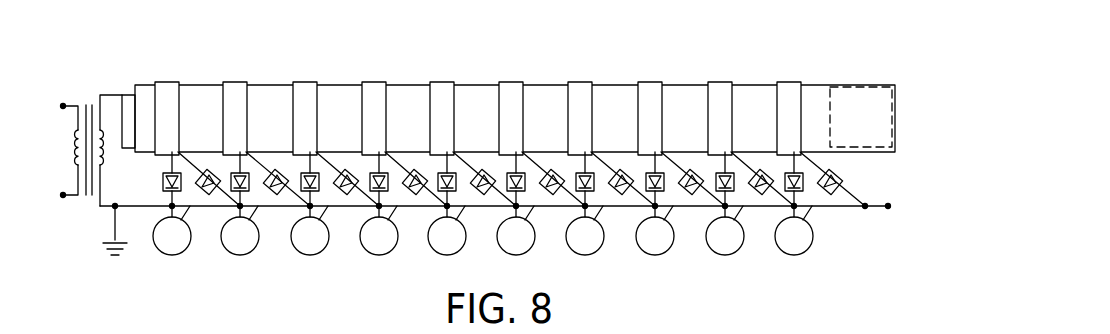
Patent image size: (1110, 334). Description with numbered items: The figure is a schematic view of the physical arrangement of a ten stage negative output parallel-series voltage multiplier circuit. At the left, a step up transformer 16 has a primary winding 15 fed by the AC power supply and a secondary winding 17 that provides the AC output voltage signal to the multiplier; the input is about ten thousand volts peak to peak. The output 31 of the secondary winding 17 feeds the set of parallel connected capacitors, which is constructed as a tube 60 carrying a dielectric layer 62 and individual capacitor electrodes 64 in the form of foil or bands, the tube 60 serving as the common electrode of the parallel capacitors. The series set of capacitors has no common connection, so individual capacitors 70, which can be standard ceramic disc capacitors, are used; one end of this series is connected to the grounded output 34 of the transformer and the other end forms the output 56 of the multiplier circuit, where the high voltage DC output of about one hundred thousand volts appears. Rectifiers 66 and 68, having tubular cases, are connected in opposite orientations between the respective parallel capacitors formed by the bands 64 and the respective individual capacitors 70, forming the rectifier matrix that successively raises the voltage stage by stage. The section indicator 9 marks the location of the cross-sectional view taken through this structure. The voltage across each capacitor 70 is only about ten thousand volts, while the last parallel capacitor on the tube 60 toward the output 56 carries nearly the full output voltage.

The section line of FIG. 9 is at (358, 77).
The primary winding 15 is at (70, 163).
The step up transformer 16 is at (76, 98).
The secondary winding 17 is at (105, 162).
The output of the secondary winding 31 is at (108, 93).
The grounded output 34 is at (142, 208).
The output of the multiplier circuit 56 is at (888, 208).
The tube 60 is at (125, 95).
The dielectric layer 62 is at (488, 68).
The individual capacitor electrodes 64 is at (223, 83).
The rectifiers 66 is at (181, 174).
The rectifiers 68 is at (208, 169).
The individual capacitors 70 is at (173, 255).